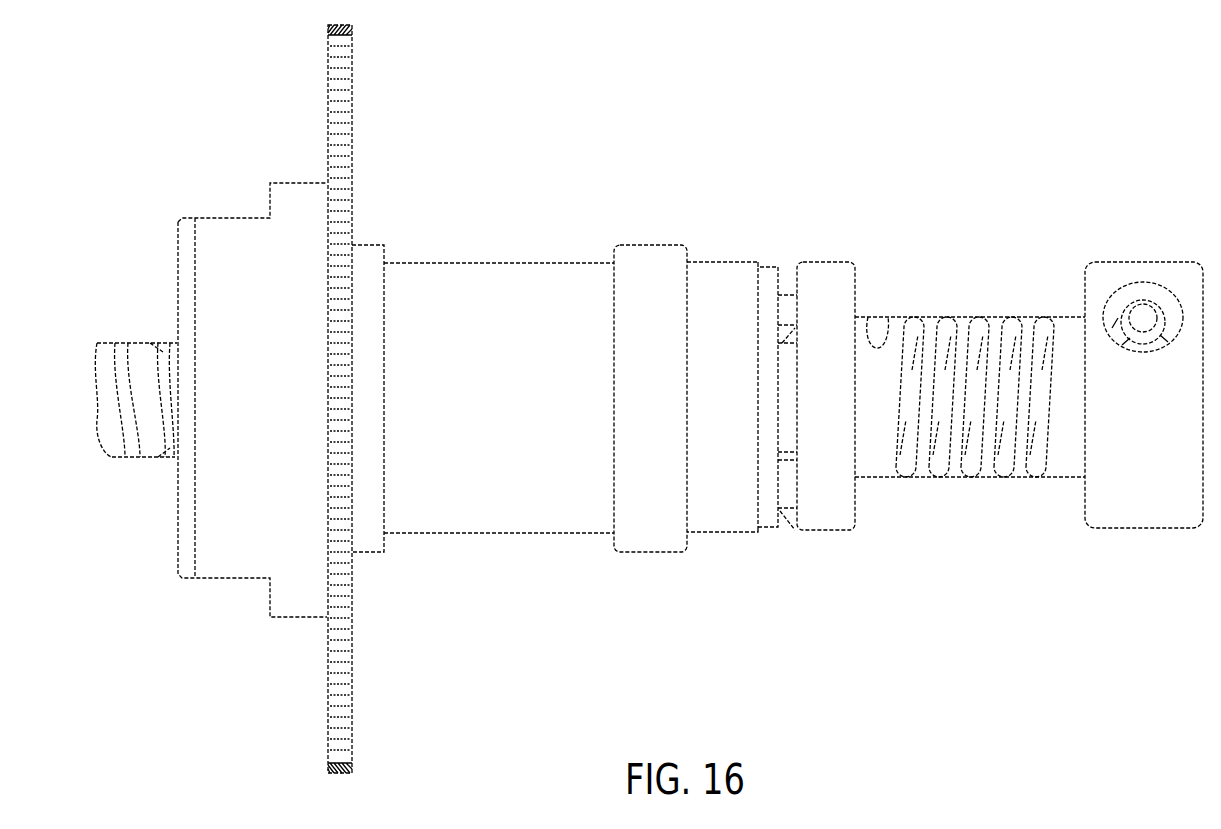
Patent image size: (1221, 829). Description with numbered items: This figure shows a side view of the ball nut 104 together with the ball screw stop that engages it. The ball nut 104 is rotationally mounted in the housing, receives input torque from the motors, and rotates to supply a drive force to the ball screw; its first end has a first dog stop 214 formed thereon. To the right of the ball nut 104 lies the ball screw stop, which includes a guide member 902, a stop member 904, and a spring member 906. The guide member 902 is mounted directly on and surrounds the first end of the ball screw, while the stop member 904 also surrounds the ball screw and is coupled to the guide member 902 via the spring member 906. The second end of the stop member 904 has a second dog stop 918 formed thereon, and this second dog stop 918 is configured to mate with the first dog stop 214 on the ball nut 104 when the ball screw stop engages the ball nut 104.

The ball nut 104 is at (577, 190).
The first dog stop 214 is at (778, 310).
The second dog stop 918 is at (778, 485).
The stop member 904 is at (828, 262).
The spring member 906 is at (930, 318).
The guide member 902 is at (1165, 262).